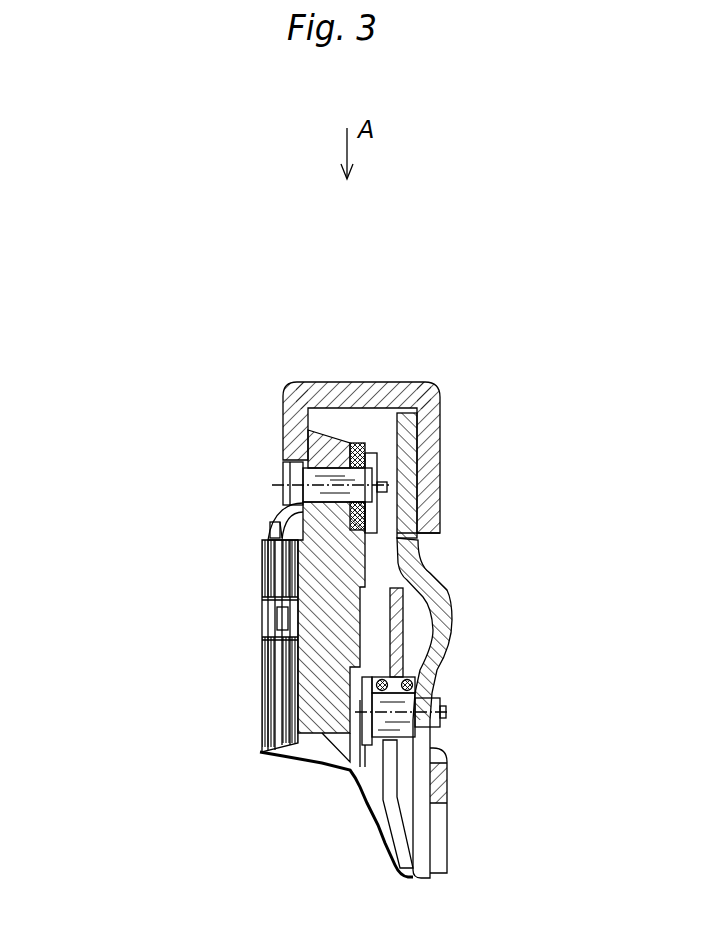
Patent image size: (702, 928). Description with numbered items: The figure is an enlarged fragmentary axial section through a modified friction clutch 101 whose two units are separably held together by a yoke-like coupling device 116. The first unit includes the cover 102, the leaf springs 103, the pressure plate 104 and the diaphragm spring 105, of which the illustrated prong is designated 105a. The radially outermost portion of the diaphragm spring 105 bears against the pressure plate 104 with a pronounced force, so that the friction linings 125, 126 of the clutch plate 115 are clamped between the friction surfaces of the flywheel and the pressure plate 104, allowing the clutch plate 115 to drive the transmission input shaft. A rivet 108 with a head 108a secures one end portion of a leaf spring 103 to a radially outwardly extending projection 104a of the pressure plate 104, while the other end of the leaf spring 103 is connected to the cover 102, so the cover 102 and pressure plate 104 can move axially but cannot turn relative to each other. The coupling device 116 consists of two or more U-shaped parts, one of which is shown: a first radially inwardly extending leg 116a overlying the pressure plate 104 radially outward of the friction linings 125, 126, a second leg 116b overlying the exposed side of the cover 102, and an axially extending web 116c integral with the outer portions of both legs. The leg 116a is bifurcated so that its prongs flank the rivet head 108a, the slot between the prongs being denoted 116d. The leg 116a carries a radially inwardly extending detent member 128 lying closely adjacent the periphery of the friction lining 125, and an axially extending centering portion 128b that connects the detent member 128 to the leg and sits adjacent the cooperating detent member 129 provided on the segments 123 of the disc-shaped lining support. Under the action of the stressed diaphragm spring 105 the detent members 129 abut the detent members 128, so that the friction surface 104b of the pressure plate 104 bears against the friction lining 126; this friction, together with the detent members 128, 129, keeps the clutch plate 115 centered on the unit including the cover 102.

The friction clutch 101 is at (503, 764).
The cover 102 is at (438, 600).
The leaf springs 103 is at (377, 397).
The pressure plate 104 is at (330, 567).
The radially outwardly extending projection 104a is at (319, 448).
The friction surface 104b is at (437, 704).
The diaphragm spring 105 is at (395, 657).
The prong 105a is at (397, 806).
The rivet 108 is at (353, 472).
The head 108a is at (288, 512).
The clutch plate 115 is at (283, 650).
The coupling device 116 is at (367, 447).
The leg 116a is at (288, 432).
The leg 116b is at (440, 418).
The web 116c is at (565, 172).
The slot 116d is at (288, 474).
The segments 123 is at (280, 750).
The friction lining 125 is at (283, 617).
The friction lining 126 is at (268, 735).
The detent member 128 is at (272, 522).
The centering portion 128b is at (205, 577).
The detent member 129 is at (283, 585).